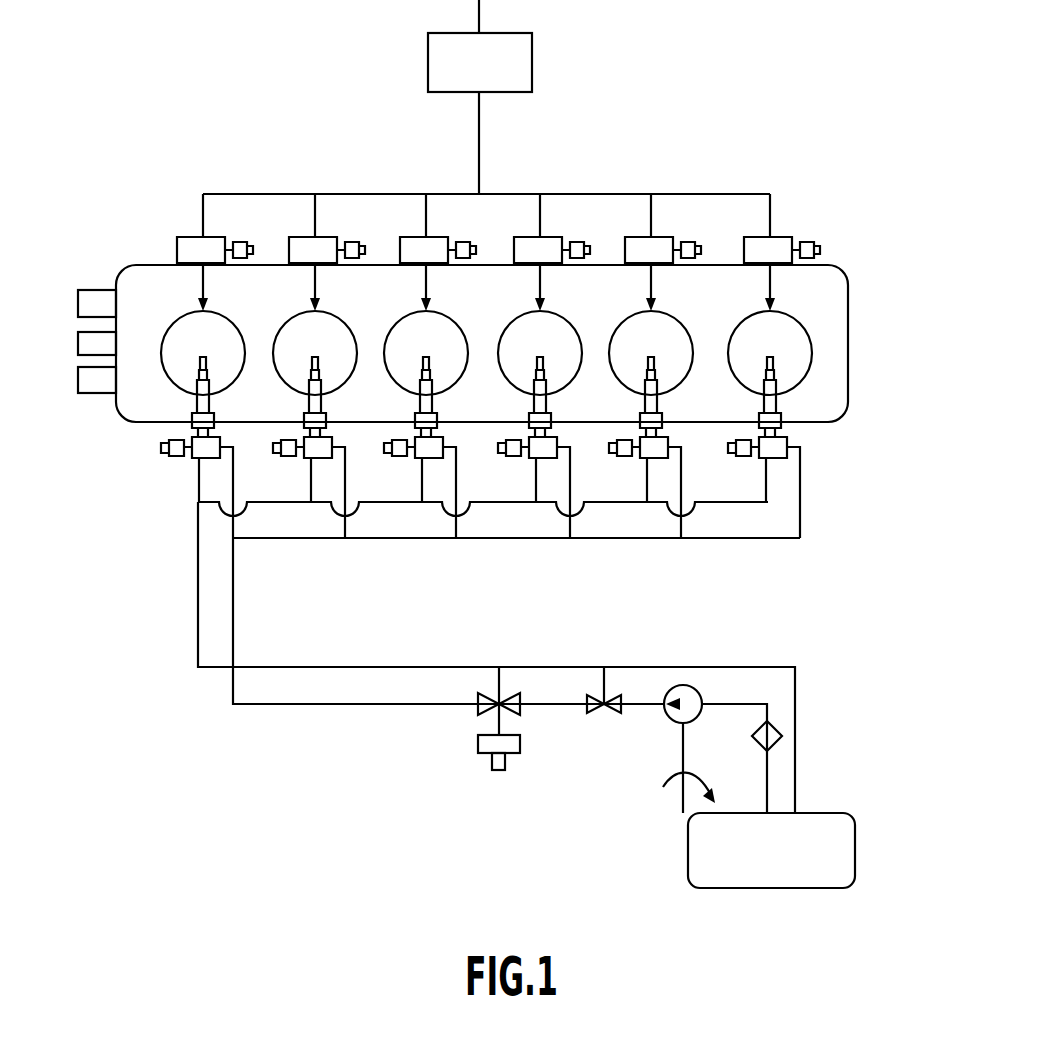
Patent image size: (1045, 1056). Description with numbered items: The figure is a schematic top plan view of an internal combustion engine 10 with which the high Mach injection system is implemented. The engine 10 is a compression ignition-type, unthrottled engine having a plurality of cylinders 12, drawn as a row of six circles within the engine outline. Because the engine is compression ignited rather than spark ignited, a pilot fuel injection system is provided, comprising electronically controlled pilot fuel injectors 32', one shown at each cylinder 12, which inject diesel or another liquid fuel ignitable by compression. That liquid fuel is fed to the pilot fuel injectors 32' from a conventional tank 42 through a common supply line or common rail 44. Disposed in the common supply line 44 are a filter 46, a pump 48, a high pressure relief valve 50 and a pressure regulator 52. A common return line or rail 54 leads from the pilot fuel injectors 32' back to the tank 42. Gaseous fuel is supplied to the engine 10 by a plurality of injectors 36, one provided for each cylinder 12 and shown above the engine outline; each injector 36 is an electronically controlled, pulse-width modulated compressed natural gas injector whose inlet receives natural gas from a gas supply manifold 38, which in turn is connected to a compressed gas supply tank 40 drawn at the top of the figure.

The engine 10 is at (858, 322).
The cylinders 12 is at (290, 333).
The pilot fuel injectors 32' is at (480, 447).
The injectors 36 is at (189, 244).
The gas supply manifold 38 is at (479, 153).
The compressed gas supply tank 40 is at (512, 60).
The tank 42 is at (830, 813).
The common supply line 44 is at (295, 705).
The filter 46 is at (778, 727).
The pump 48 is at (672, 718).
The high pressure relief valve 50 is at (597, 712).
The pressure regulator 52 is at (493, 710).
The common return line 54 is at (197, 582).